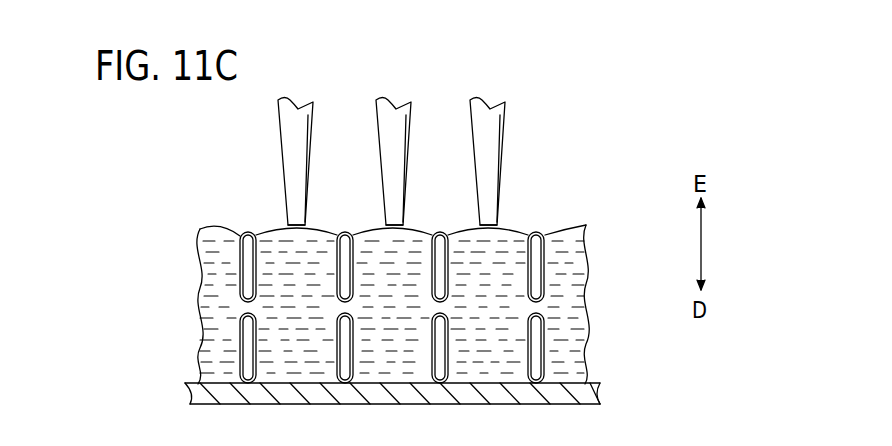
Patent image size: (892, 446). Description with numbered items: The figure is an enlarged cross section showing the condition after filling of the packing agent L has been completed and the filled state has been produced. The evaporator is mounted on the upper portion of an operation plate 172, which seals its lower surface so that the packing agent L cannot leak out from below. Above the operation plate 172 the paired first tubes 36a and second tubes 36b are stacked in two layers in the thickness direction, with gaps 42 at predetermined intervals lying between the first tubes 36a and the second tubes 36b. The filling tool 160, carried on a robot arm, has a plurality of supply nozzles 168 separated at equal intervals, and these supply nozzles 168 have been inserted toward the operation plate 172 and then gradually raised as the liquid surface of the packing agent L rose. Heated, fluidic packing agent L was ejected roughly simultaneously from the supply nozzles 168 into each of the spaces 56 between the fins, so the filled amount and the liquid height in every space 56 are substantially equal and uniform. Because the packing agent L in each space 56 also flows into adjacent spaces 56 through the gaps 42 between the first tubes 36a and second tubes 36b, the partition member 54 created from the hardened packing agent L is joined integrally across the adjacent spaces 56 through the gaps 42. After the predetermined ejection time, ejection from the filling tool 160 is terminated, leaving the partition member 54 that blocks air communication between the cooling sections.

The filling tool 160 is at (539, 70).
The supply nozzles 168 is at (292, 120).
The partition member 54 is at (517, 237).
The spaces 56 is at (274, 263).
The second tube 36b is at (548, 258).
The gaps 42 is at (548, 300).
The first tube 36a is at (548, 352).
The operation plate 172 is at (497, 386).
The packing agent L is at (392, 362).